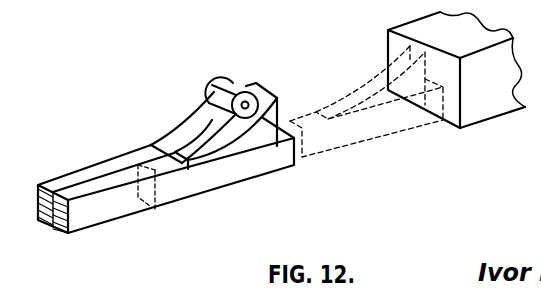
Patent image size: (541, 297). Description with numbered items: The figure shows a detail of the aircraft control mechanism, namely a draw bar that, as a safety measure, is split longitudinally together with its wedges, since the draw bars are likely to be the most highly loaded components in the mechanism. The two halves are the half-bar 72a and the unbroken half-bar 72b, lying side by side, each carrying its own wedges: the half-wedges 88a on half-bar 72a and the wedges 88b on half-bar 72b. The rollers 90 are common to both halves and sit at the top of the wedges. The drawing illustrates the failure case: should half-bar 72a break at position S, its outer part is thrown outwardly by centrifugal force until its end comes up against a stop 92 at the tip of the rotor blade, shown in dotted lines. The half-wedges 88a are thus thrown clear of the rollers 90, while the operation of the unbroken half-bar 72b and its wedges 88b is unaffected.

The half-bar 72a is at (83, 224).
The unbroken half-bar 72b is at (60, 180).
The failure position S is at (155, 209).
The half-wedges 88a is at (230, 150).
The wedges 88b is at (177, 132).
The rollers 90 is at (219, 85).
The stop 92 is at (475, 120).